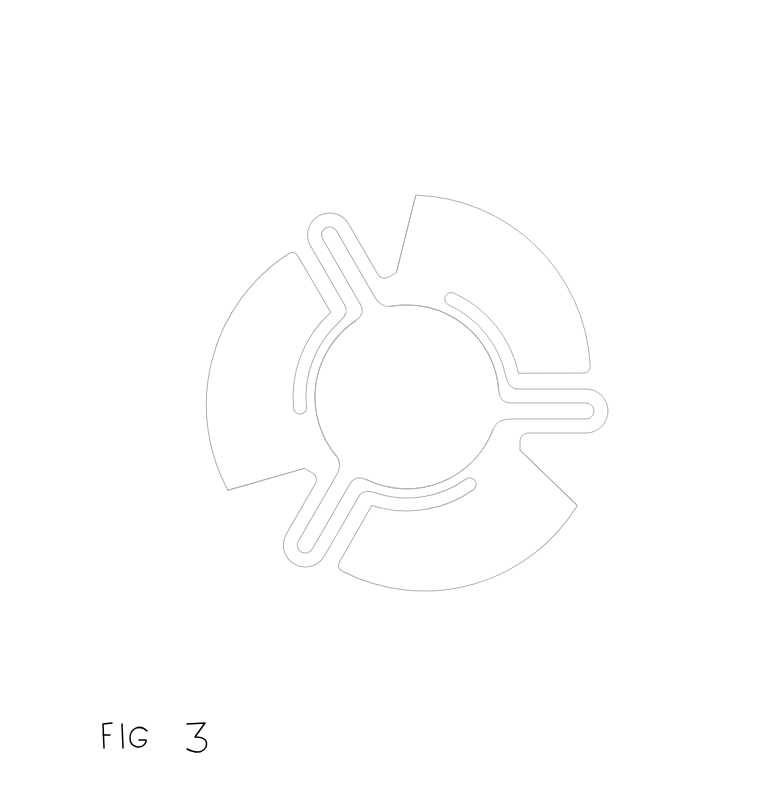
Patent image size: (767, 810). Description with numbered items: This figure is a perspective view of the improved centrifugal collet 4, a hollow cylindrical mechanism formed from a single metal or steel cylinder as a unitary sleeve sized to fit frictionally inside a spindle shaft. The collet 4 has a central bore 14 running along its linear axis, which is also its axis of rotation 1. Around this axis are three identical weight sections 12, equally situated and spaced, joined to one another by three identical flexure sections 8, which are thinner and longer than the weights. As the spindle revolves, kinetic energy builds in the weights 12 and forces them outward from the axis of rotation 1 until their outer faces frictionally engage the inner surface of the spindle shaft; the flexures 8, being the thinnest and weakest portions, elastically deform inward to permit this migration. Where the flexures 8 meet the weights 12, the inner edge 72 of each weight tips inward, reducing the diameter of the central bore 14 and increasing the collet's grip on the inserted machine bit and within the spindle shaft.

The axis of rotation 1 is at (405, 400).
The improved centrifugal collet 4 is at (667, 652).
The flexure section 8 is at (323, 224).
The weight section 12 is at (498, 229).
The central bore 14 is at (458, 378).
The inner edge of weight 72 is at (378, 308).